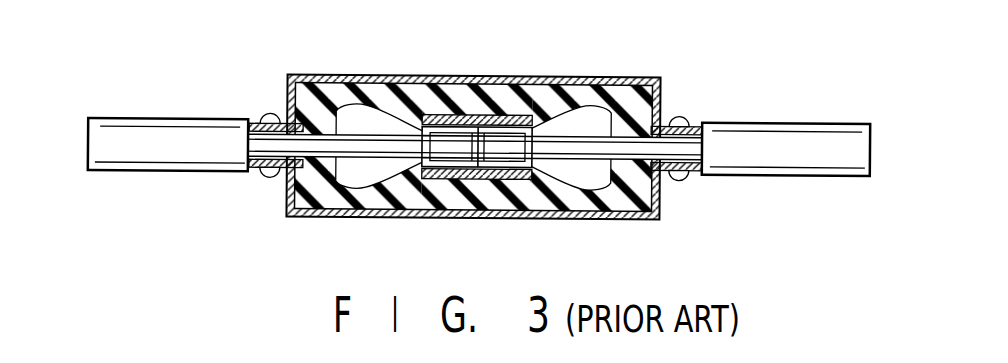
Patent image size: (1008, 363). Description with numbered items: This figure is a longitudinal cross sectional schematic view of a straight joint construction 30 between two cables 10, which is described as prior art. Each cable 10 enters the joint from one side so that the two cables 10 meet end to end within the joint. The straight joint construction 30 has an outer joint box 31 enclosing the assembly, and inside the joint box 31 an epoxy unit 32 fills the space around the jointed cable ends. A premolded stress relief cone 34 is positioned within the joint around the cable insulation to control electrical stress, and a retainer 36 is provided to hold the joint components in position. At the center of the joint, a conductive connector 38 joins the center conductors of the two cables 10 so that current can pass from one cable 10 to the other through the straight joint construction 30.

The cable 10 is at (157, 112).
The straight joint construction 30 is at (633, 68).
The joint box 31 is at (602, 77).
The epoxy unit 32 is at (384, 77).
The premolded stress relief cone 34 is at (545, 77).
The retainer 36 is at (432, 172).
The conductive connector 38 is at (510, 172).